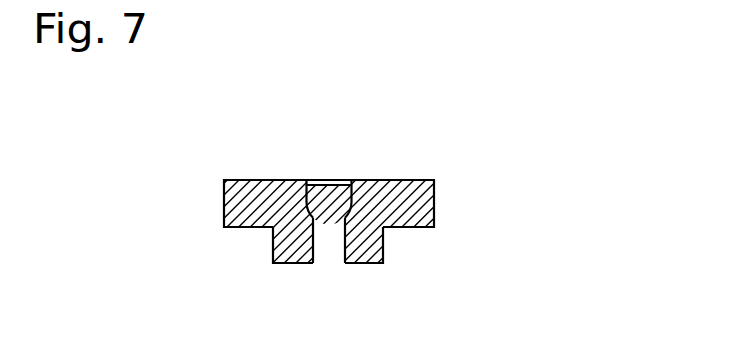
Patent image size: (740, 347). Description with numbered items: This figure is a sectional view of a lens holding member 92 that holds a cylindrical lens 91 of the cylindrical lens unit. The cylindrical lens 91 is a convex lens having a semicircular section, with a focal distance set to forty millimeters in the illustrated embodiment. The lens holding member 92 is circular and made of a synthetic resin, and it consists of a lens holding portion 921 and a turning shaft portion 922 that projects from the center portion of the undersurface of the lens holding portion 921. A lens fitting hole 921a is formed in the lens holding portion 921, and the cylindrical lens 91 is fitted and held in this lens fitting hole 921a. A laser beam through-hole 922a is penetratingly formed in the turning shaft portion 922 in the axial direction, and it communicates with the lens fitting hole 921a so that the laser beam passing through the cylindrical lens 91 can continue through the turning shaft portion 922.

The lens holding member 92 is at (328, 200).
The cylindrical lens 91 is at (338, 185).
The lens holding portion 921 is at (434, 197).
The lens fitting hole 921a is at (368, 205).
The turning shaft portion 922 is at (383, 251).
The laser beam through-hole 922a is at (328, 257).